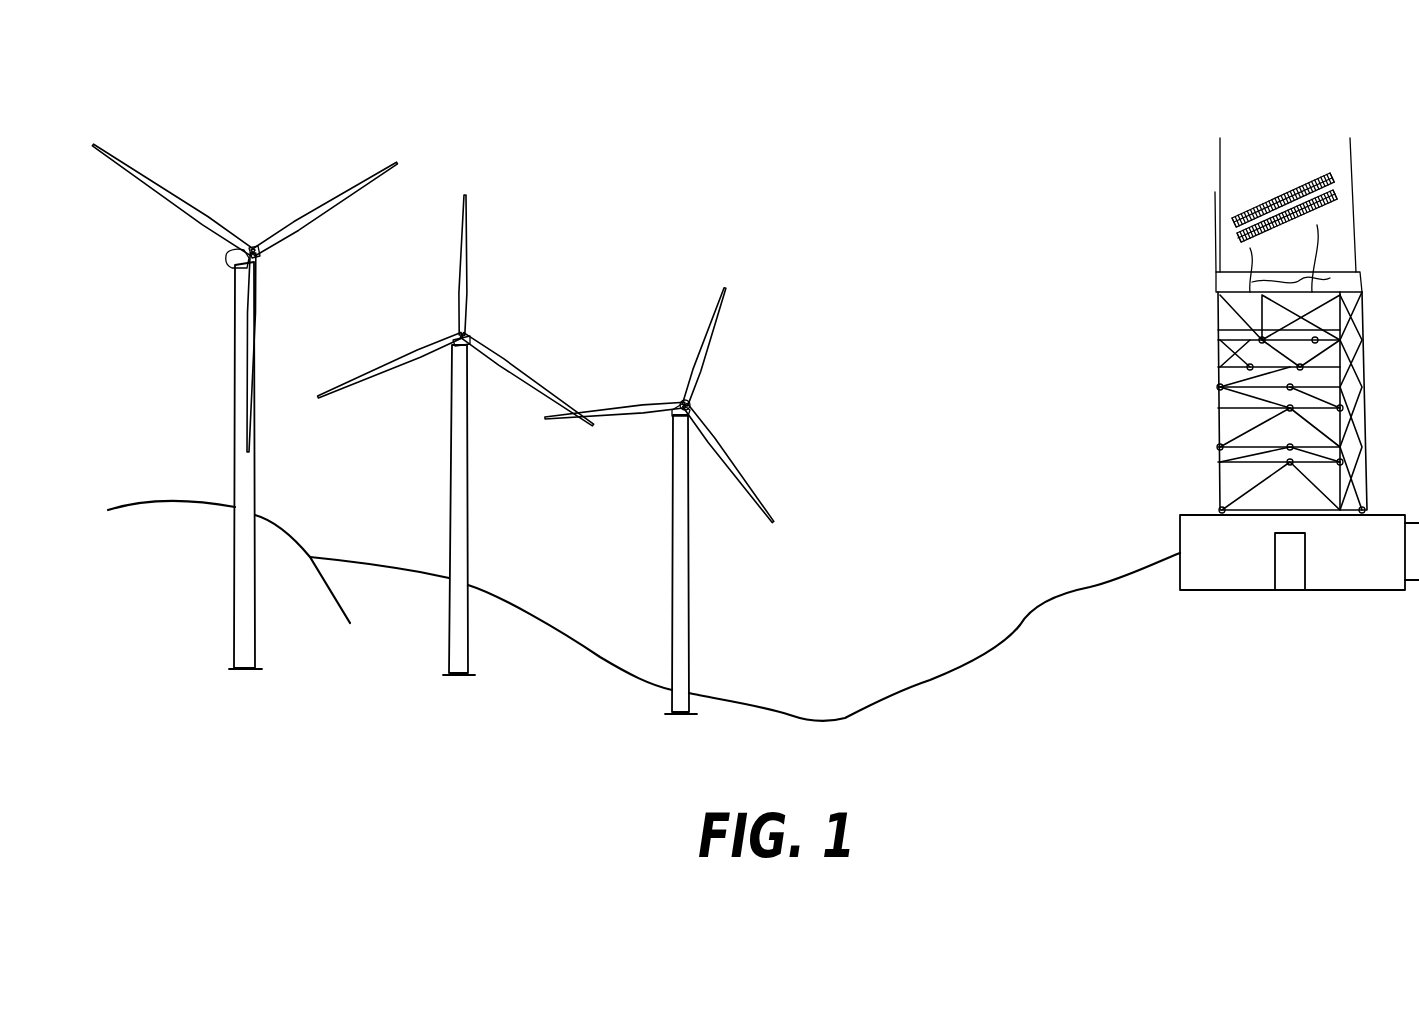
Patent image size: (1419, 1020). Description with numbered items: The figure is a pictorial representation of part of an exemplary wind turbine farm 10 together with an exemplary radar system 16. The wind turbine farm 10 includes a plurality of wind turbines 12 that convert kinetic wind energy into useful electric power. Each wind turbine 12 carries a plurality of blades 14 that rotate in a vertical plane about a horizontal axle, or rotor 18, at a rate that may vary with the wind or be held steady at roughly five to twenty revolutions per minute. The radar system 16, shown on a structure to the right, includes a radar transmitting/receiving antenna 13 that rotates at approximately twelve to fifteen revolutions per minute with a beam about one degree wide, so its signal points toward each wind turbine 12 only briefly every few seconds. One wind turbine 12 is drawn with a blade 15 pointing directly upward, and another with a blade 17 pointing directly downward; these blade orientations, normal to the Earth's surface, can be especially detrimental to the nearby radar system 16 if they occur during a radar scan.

The wind turbine farm 10 is at (659, 176).
The wind turbine 12 is at (257, 491).
The radar transmitting/receiving antenna 13 is at (1262, 140).
The blades 14 is at (640, 402).
The blade 15 is at (467, 262).
The radar system 16 is at (1267, 287).
The blade 17 is at (258, 300).
The rotor 18 is at (691, 405).